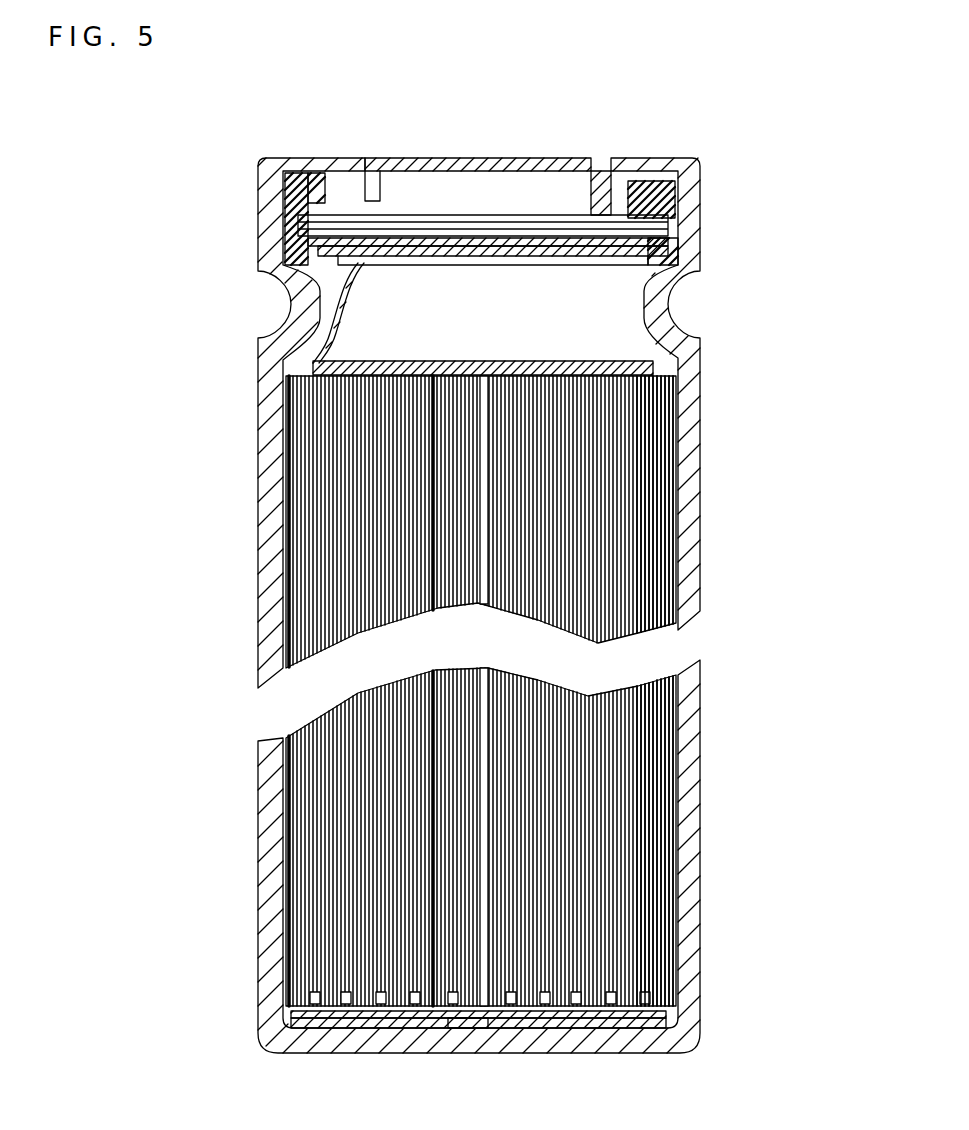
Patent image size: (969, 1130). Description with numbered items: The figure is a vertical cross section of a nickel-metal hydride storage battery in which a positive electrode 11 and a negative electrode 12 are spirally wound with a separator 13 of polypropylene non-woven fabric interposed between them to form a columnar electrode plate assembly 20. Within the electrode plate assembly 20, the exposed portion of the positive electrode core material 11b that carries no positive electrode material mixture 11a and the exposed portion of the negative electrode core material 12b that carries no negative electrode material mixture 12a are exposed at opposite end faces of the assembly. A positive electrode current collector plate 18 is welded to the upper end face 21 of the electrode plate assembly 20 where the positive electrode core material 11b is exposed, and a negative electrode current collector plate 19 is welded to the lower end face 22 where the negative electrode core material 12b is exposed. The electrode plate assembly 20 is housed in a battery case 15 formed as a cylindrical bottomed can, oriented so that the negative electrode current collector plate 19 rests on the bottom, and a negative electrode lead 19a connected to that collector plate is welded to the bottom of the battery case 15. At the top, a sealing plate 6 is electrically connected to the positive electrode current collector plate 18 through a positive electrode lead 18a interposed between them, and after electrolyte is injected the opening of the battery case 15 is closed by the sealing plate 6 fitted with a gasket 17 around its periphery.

The sealing plate 6 is at (603, 173).
The gasket 17 is at (647, 175).
The positive electrode current collector plate 18 is at (477, 355).
The positive electrode lead 18a is at (338, 295).
The end face 21 is at (558, 357).
The electrode plate assembly 20 is at (587, 653).
The positive electrode 11 is at (738, 503).
The positive electrode material mixture 11a is at (763, 390).
The positive electrode core material 11b is at (695, 423).
The negative electrode 12 is at (738, 841).
The negative electrode material mixture 12a is at (695, 855).
The negative electrode core material 12b is at (767, 813).
The separator 13 is at (695, 550).
The battery case 15 is at (260, 907).
The end face 22 is at (368, 1043).
The negative electrode current collector plate 19 is at (533, 1043).
The negative electrode lead 19a is at (462, 1043).